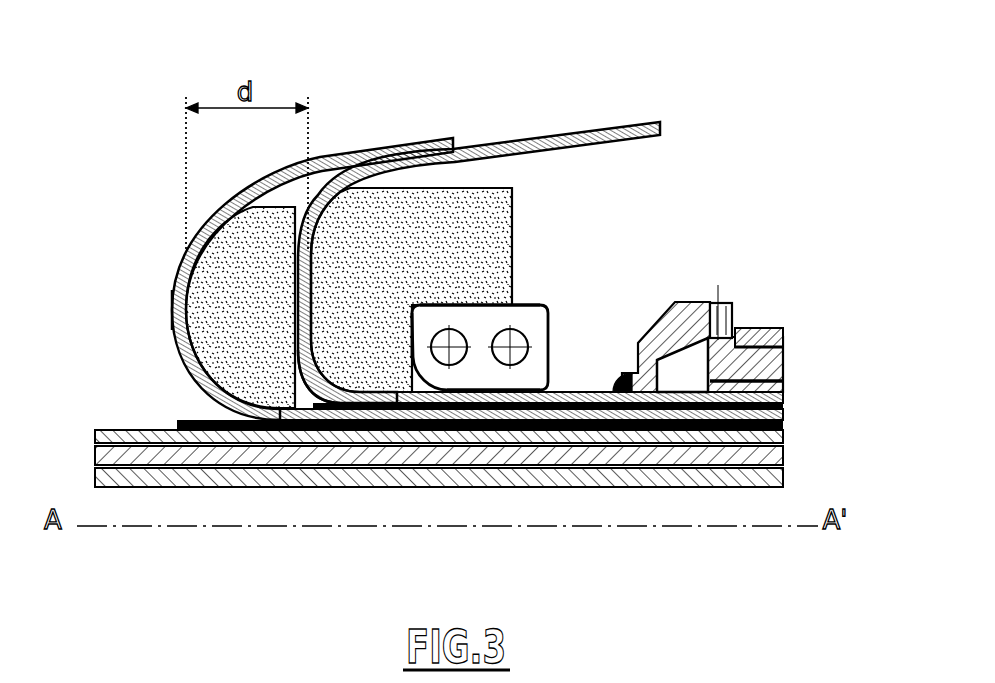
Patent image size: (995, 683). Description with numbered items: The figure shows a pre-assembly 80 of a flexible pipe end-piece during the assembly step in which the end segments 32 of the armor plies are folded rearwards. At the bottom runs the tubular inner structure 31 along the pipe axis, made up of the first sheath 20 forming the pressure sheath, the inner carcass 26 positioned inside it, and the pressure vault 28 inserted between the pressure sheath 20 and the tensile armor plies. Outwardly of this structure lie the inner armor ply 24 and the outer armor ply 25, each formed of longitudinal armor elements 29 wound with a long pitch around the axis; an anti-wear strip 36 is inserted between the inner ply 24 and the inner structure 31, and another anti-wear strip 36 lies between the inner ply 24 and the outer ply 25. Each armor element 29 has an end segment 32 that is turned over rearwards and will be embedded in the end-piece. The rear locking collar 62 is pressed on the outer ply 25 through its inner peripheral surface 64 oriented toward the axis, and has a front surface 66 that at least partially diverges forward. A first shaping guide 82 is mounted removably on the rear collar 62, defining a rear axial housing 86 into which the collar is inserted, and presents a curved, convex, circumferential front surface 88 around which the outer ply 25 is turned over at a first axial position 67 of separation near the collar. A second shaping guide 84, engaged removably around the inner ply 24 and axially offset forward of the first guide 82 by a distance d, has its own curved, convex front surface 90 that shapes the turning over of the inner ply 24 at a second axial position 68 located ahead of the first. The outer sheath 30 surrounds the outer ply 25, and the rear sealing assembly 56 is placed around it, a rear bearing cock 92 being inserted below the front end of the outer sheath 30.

The first sheath 20 is at (775, 455).
The inner armor ply 24 is at (775, 416).
The outer armor ply 25 is at (772, 395).
The inner carcass 26 is at (672, 475).
The pressure vault 28 is at (777, 437).
The armor element 29 is at (389, 219).
The outer sheath 30 is at (753, 325).
The tubular inner structure 31 is at (482, 499).
The end segment 32 is at (588, 116).
The anti-wear strip 36 is at (640, 394).
The rear sealing assembly 56 is at (742, 420).
The rear locking collar 62 is at (482, 418).
The inner peripheral surface 64 is at (484, 392).
The front surface 66 is at (412, 388).
The first axial position 67 is at (407, 408).
The second axial position 68 is at (273, 425).
The pre-assembly 80 is at (437, 296).
The first shaping guide 82 is at (485, 203).
The second shaping guide 84 is at (257, 223).
The rear axial housing 86 is at (500, 316).
The front surface 88 is at (332, 392).
The front surface 90 is at (188, 328).
The rear bearing cock 92 is at (772, 328).